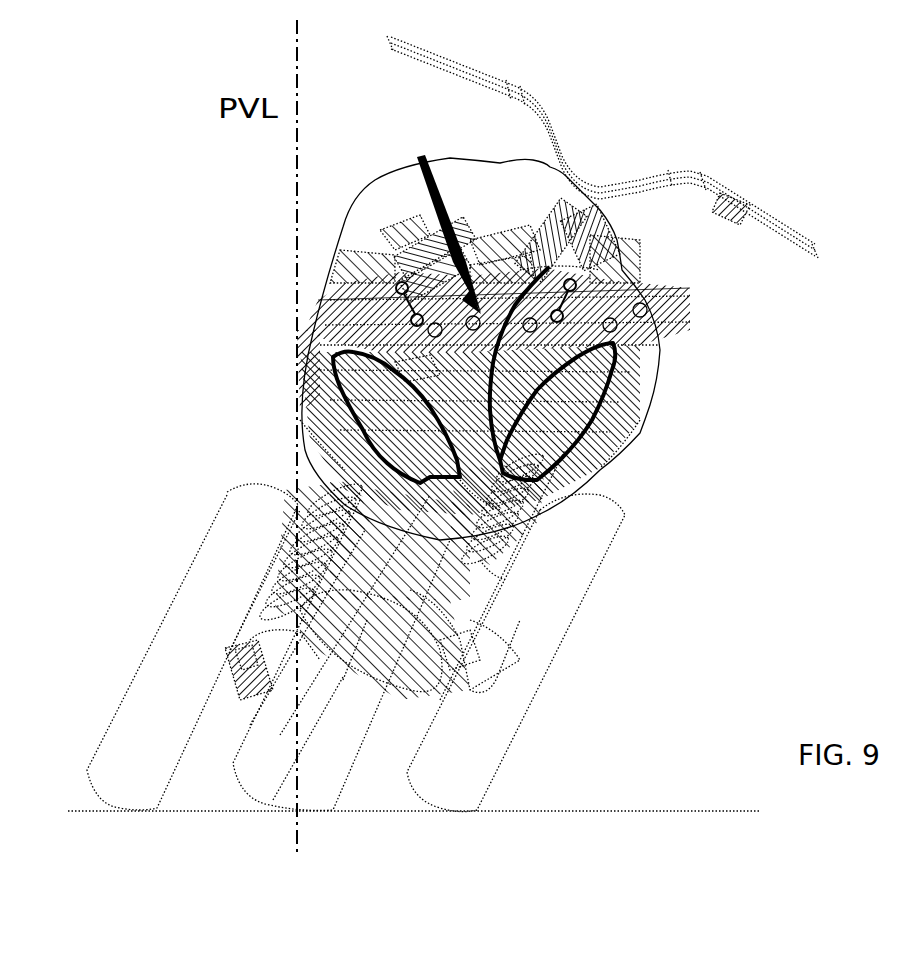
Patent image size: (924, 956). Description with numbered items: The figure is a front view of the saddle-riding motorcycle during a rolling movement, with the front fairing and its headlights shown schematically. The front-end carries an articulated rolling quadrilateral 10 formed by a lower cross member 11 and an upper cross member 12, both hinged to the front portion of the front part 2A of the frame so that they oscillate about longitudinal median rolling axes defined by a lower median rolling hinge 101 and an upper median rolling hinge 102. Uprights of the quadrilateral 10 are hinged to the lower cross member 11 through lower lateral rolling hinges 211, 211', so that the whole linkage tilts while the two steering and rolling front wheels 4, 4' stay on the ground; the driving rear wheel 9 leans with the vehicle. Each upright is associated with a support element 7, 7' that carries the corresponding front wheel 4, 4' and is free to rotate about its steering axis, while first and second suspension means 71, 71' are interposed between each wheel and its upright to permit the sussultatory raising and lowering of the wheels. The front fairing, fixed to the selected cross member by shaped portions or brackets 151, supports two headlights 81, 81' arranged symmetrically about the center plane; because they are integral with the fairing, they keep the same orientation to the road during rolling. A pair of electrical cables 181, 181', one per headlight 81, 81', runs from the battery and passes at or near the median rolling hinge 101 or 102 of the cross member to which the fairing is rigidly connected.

The articulated rolling quadrilateral 10 is at (323, 348).
The lower cross member 11 is at (405, 365).
The upper cross member 12 is at (440, 218).
The front part of the frame 2A is at (500, 547).
The first front wheel 4 is at (516, 653).
The second front wheel 4' is at (192, 647).
The first support element 7 is at (687, 505).
The second support element 7' is at (244, 405).
The rear wheel 9 is at (345, 758).
The first suspension means 71 is at (568, 603).
The second suspension means 71' is at (245, 542).
The first headlight 81 is at (633, 553).
The second headlight 81' is at (272, 488).
The lower median rolling hinge 101 is at (467, 412).
The upper median rolling hinge 102 is at (467, 412).
The shaped portions 151 is at (407, 307).
The first electrical cable 181 is at (602, 315).
The second electrical cable 181' is at (504, 294).
The lower lateral rolling hinge of first upright 211 is at (650, 374).
The lower lateral rolling hinge of second upright 211' is at (272, 376).